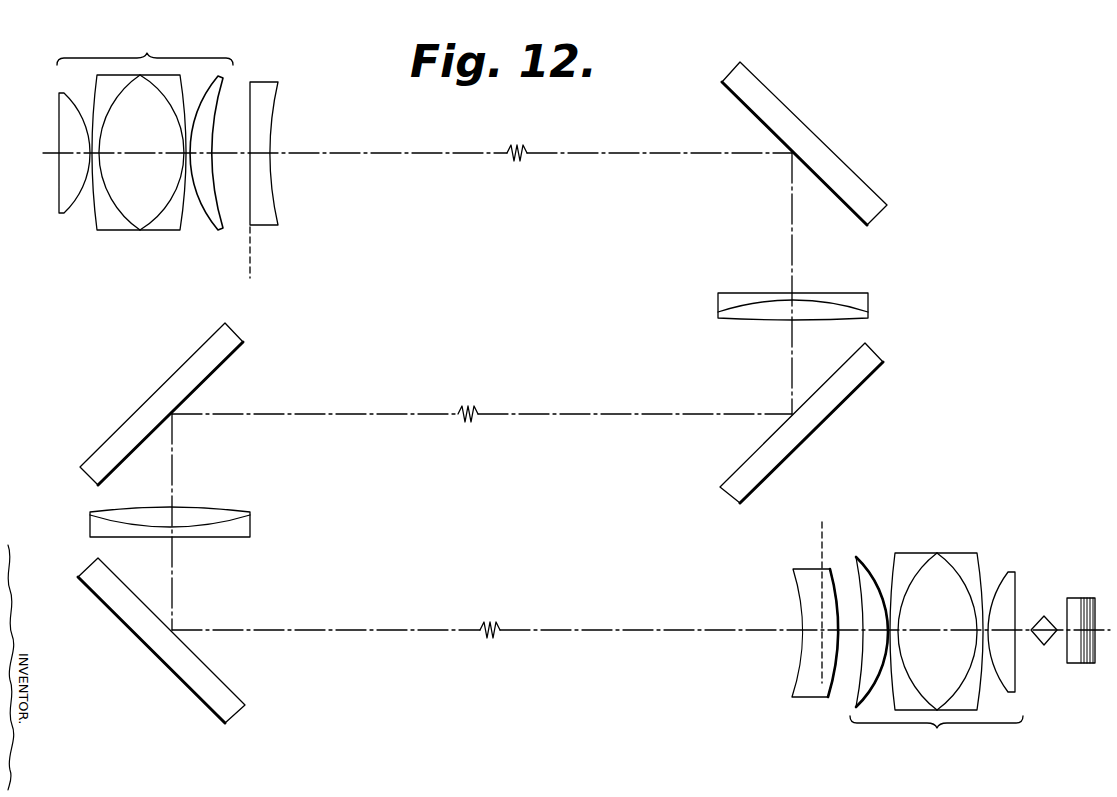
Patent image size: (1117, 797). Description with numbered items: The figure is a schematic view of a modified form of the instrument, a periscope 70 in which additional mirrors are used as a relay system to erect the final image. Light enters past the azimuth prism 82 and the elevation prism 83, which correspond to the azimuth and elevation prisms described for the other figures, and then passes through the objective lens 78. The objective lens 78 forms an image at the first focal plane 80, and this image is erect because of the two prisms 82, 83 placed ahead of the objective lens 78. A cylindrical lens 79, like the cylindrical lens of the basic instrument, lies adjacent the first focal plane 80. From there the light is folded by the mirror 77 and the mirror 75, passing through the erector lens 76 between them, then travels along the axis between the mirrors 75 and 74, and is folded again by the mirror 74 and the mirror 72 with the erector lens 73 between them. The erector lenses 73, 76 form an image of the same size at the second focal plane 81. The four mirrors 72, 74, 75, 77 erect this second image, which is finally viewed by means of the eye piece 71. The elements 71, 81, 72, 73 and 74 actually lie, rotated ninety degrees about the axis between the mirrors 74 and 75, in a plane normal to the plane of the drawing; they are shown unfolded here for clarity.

The periscope 70 is at (549, 132).
The eye piece 71 is at (145, 132).
The mirror 72 is at (778, 102).
The erector lens 73 is at (857, 296).
The mirror 74 is at (856, 385).
The mirror 75 is at (170, 380).
The erector lens 76 is at (230, 510).
The mirror 77 is at (220, 688).
The objective lens 78 is at (936, 653).
The cylindrical lens 79 is at (828, 572).
The first focal plane 80 is at (822, 537).
The second focal plane 81 is at (250, 260).
The azimuth prism 82 is at (1047, 618).
The elevation prism 83 is at (1077, 662).